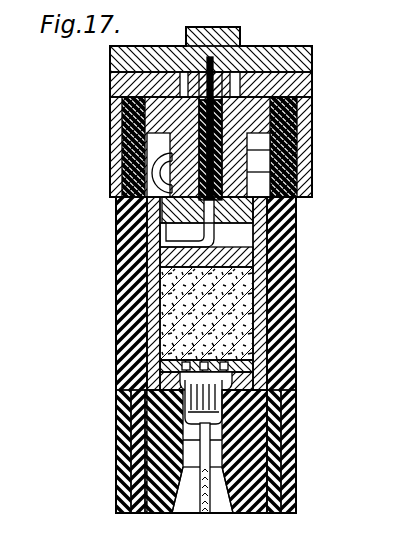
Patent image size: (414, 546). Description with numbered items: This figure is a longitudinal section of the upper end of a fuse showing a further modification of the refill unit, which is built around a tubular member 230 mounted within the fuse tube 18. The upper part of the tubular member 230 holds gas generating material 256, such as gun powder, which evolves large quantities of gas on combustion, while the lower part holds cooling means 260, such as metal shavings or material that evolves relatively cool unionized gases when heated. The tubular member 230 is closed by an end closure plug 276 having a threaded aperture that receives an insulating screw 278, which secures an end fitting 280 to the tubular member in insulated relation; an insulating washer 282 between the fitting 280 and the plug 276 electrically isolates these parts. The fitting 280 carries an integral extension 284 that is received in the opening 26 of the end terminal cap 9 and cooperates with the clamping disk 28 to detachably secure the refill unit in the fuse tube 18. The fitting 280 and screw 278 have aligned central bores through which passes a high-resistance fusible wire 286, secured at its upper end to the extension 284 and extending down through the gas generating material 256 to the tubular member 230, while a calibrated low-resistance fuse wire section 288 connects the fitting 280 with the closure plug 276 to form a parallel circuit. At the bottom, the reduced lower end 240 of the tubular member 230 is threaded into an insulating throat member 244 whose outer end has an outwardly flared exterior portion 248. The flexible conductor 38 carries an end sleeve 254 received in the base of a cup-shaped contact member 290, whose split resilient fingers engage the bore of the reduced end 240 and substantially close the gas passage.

The integral extension 284 is at (228, 54).
The clamping disk 28 is at (110, 61).
The opening 26 is at (233, 82).
The end fitting 280 is at (297, 120).
The end terminal cap 9 is at (305, 141).
The insulating screw 278 is at (249, 163).
The insulating washer 282 is at (249, 172).
The end closure plug 276 is at (305, 196).
The calibrated low-resistance fuse wire section 288 is at (150, 168).
The gas generating material 256 is at (118, 246).
The high-resistance fusible wire 286 is at (297, 247).
The cooling means 260 is at (157, 318).
The tubular member 230 is at (297, 292).
The fuse tube 18 is at (298, 374).
The sleeve 254 is at (116, 430).
The reduced lower end 240 is at (290, 428).
The cup-shaped contact member 290 is at (292, 455).
The insulating throat member 244 is at (296, 490).
The outwardly flared exterior portion 248 is at (177, 512).
The flexible conductor 38 is at (208, 514).